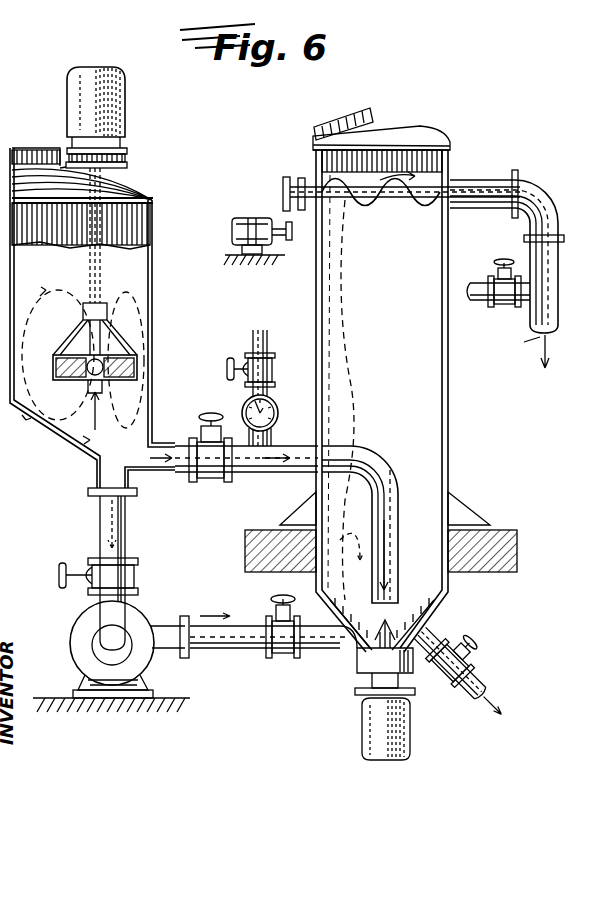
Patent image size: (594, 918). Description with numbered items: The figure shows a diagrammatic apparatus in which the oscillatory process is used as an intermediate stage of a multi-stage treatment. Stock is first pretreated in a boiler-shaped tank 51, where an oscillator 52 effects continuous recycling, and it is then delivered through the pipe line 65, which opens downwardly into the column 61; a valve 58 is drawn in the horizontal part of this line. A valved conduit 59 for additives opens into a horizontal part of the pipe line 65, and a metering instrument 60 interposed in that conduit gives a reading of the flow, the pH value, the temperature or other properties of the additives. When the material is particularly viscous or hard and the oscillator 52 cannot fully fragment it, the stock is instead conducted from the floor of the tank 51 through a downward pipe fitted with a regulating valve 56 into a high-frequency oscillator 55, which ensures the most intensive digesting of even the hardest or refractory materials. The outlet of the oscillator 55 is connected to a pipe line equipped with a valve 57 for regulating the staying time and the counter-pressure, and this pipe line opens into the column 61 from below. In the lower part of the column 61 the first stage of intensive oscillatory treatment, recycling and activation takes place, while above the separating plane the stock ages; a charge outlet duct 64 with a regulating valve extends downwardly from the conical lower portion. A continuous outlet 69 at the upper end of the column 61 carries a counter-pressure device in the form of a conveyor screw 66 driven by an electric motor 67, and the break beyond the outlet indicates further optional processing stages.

The tank 51 is at (68, 412).
The oscillator 52 is at (138, 367).
The high-frequency oscillator 55 is at (80, 628).
The regulating valve 56 is at (138, 582).
The valve 57 is at (288, 655).
The valve 58 is at (213, 478).
The valved conduit 59 is at (273, 360).
The metering instrument 60 is at (276, 408).
The column 61 is at (316, 291).
The charge outlet duct 64 is at (470, 686).
The pipe line 65 is at (388, 482).
The conveyor screw 66 is at (405, 200).
The electric motor 67 is at (256, 228).
The continuous outlet 69 is at (538, 190).